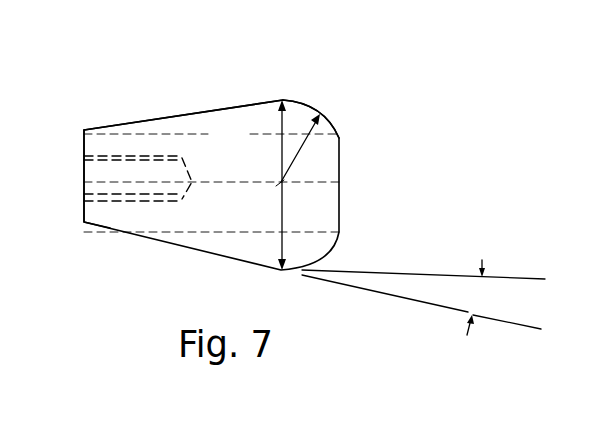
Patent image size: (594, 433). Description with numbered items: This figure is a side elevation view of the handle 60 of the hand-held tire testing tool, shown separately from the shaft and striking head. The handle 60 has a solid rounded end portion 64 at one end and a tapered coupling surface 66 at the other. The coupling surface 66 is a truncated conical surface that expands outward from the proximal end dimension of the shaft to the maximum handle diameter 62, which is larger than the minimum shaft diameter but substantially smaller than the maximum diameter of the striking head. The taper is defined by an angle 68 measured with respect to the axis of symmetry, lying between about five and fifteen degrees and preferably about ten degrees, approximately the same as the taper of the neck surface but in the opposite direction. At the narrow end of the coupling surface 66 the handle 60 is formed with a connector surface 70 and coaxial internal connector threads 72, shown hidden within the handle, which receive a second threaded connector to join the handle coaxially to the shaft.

The handle 60 is at (276, 62).
The maximum handle diameter 62 is at (278, 219).
The solid rounded end portion 64 is at (334, 127).
The tapered coupling surface 66 is at (204, 113).
The angle 68 is at (460, 330).
The connector surface 70 is at (84, 221).
The coaxial internal connector threads 72 is at (147, 157).